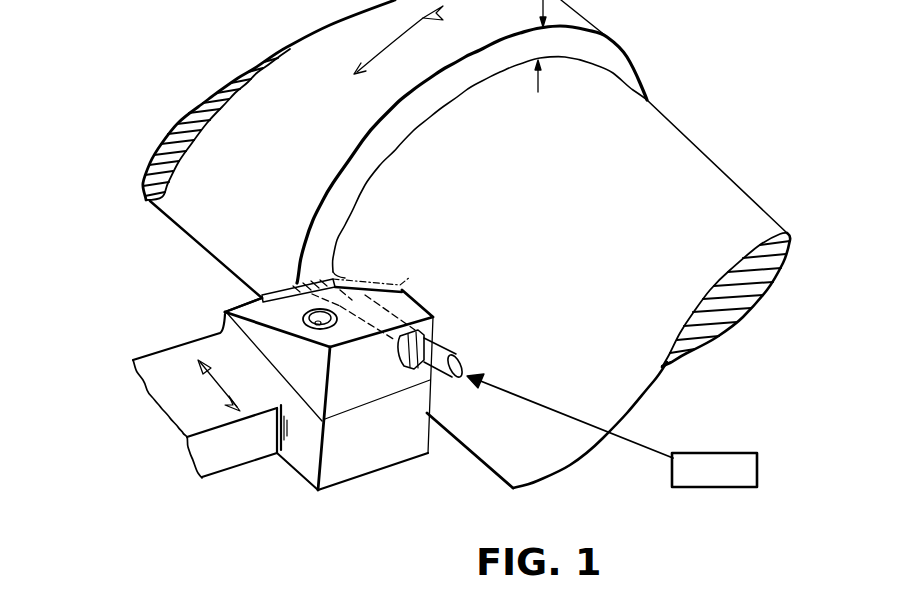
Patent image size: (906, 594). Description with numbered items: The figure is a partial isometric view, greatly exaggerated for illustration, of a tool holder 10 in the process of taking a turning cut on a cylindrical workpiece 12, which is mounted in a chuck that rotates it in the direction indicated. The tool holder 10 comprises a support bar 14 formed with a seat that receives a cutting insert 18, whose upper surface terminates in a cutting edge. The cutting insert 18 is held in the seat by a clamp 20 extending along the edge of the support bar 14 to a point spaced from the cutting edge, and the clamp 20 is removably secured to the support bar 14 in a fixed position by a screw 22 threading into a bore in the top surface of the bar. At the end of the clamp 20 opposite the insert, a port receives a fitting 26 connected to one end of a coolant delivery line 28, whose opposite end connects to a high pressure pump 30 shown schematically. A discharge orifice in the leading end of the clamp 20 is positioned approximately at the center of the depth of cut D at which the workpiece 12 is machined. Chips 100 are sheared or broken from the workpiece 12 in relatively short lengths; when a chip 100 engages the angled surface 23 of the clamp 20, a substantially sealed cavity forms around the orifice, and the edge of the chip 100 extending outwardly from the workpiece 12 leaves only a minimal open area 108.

The tool holder 10 is at (125, 316).
The workpiece 12 is at (717, 188).
The support bar 14 is at (205, 453).
The cutting insert 18 is at (276, 292).
The clamp 20 is at (433, 313).
The screw 22 is at (323, 328).
The angled surface 23 is at (227, 311).
The fitting 26 is at (434, 333).
The coolant delivery line 28 is at (462, 357).
The high pressure pump 30 is at (712, 452).
The chip 100 is at (340, 268).
The open area 108 is at (295, 281).
The depth of cut D is at (537, 46).